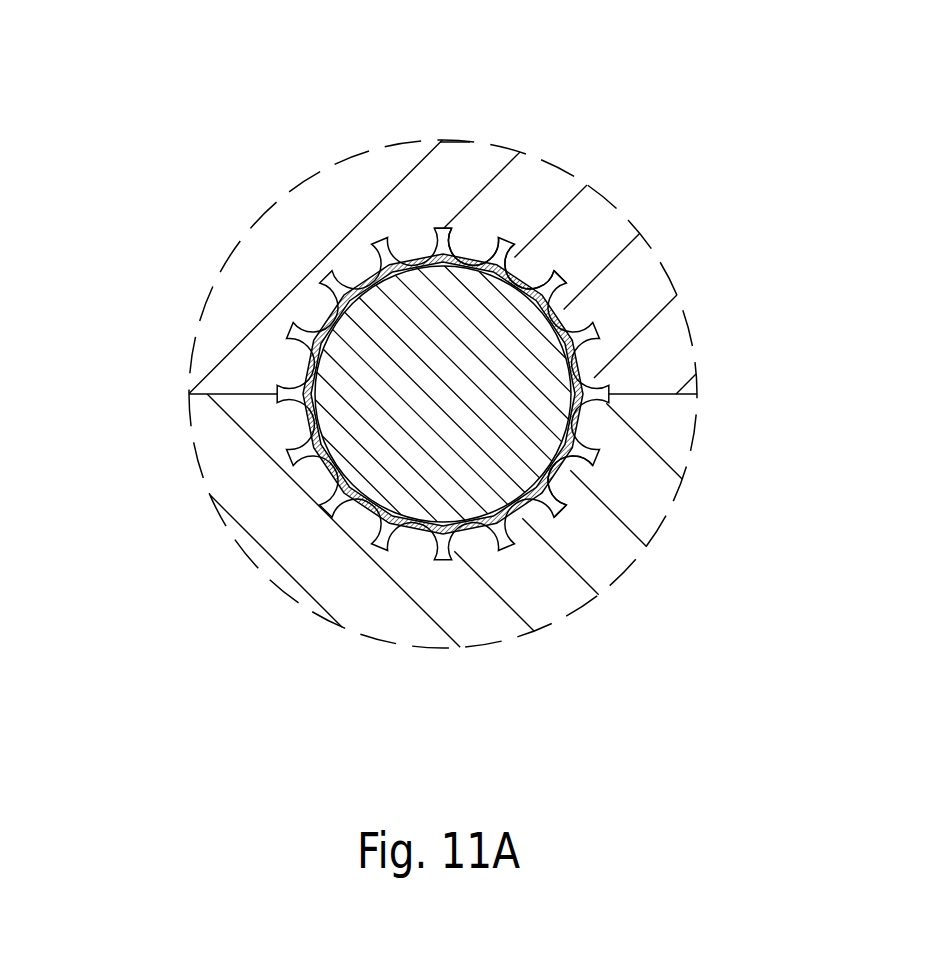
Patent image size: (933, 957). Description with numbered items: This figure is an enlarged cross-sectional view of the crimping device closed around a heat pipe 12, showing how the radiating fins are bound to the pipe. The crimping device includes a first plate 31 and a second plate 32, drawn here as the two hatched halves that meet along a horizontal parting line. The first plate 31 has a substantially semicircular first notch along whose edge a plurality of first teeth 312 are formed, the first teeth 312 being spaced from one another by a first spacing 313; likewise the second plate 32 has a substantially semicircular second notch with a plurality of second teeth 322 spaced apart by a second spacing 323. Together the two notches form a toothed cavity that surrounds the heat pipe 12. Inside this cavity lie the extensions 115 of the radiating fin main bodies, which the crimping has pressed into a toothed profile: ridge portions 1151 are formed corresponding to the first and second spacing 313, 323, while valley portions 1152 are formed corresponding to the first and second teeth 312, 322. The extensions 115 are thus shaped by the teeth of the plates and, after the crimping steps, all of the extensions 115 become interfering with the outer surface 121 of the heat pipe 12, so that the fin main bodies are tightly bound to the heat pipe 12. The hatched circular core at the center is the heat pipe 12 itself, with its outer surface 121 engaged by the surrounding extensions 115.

The heat pipe 12 is at (373, 411).
The outer surface of the heat pipe 121 is at (318, 320).
The extension 115 is at (755, 53).
The ridge portion 1151 is at (441, 229).
The valley portion 1152 is at (473, 250).
The first plate 31 is at (660, 360).
The first teeth 312 is at (527, 268).
The first spacing 313 is at (543, 277).
The second plate 32 is at (666, 432).
The second teeth 322 is at (567, 468).
The second spacing 323 is at (573, 476).